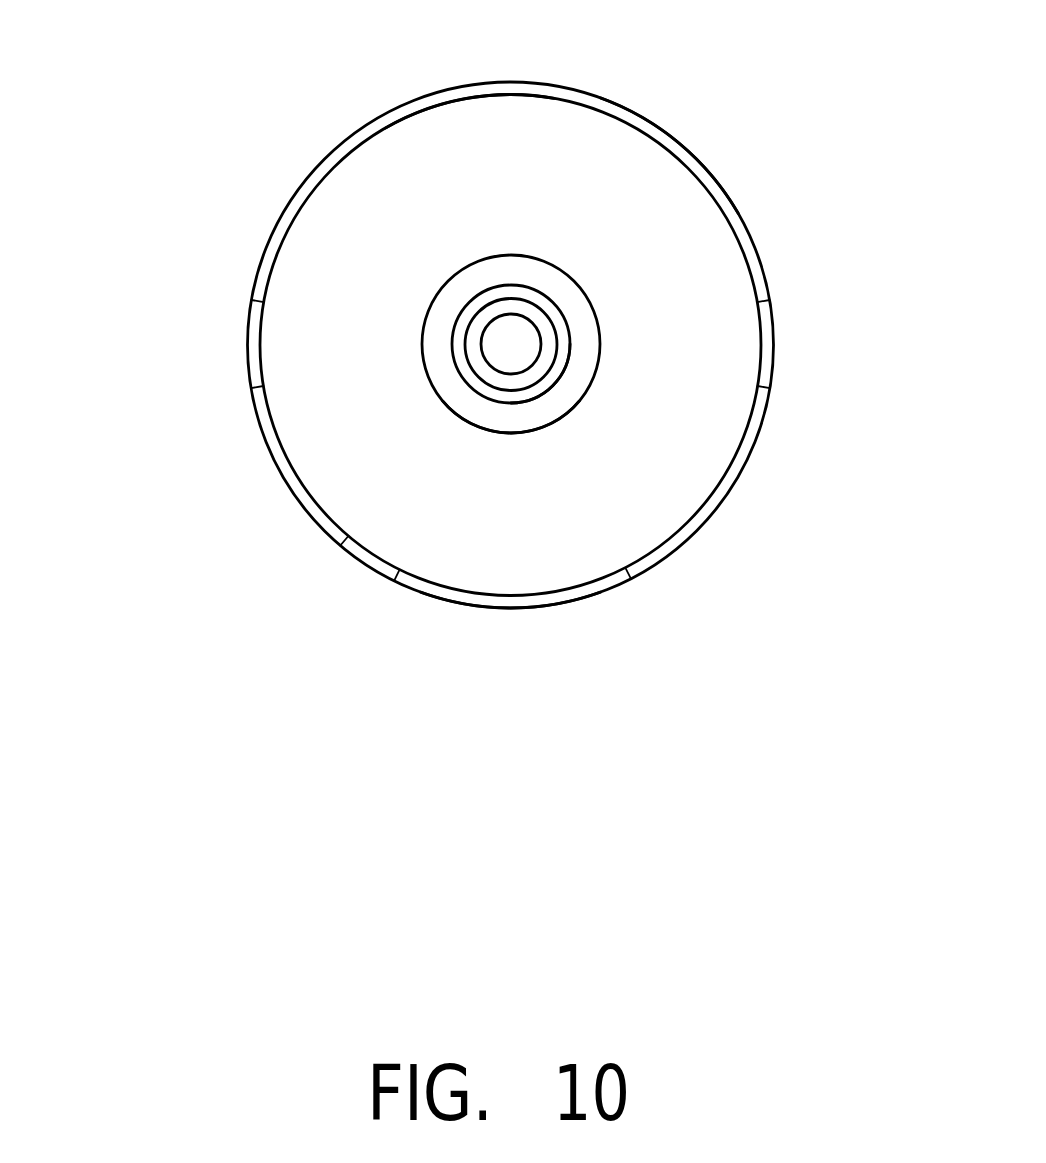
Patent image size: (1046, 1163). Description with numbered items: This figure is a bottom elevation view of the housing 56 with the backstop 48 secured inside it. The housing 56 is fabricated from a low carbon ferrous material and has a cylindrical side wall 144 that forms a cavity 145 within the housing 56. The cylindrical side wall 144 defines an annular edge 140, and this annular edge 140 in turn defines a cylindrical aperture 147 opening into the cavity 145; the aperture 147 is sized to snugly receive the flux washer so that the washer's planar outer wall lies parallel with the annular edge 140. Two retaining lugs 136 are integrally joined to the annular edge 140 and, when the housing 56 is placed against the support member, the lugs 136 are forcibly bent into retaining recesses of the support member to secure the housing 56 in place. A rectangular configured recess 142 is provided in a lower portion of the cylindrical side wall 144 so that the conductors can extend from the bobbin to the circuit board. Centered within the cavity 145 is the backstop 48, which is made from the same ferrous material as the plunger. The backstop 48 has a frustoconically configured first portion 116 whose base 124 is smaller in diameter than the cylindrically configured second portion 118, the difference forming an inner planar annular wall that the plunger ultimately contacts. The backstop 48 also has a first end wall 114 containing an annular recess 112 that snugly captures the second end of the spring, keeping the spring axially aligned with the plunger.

The backstop 48 is at (565, 295).
The housing 56 is at (738, 228).
The annular recess 112 is at (505, 350).
The first end wall 114 is at (538, 370).
The first portion 116 is at (560, 336).
The second portion 118 is at (543, 430).
The base 124 is at (568, 363).
The retaining lugs 136 is at (765, 352).
The annular edge 140 is at (270, 443).
The rectangular configured recess 142 is at (514, 600).
The cylindrical side wall 144 is at (665, 125).
The cavity 145 is at (490, 180).
The cylindrical aperture 147 is at (347, 533).